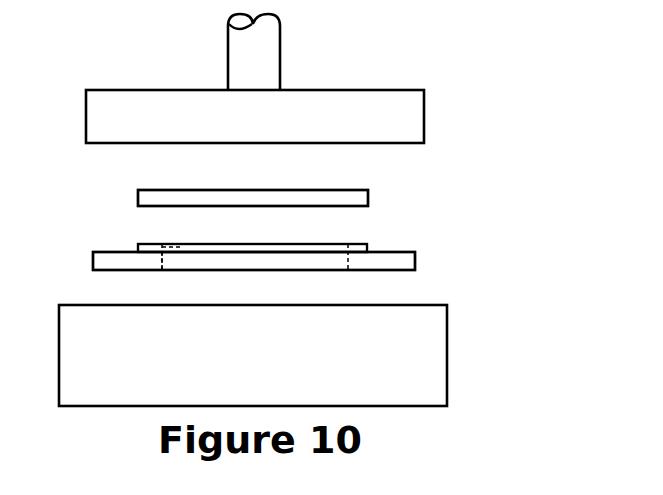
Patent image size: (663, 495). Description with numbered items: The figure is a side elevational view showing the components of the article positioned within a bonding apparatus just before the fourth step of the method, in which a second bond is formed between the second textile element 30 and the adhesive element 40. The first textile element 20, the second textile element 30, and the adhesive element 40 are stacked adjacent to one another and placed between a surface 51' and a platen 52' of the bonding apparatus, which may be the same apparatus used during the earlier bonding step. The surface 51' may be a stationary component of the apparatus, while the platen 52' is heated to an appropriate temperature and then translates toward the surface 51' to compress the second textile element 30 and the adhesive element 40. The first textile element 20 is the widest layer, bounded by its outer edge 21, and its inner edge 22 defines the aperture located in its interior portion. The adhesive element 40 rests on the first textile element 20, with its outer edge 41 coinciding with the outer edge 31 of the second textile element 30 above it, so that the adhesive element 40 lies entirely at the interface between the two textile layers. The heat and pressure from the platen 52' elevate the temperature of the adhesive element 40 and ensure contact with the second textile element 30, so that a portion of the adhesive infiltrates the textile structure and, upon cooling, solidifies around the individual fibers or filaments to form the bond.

The platen 52' is at (288, 78).
The surface 51' is at (287, 355).
The second textile element 30 is at (166, 187).
The outer edge 31 is at (370, 197).
The first textile element 20 is at (97, 248).
The outer edge 21 is at (417, 261).
The outer edge 41 is at (367, 245).
The adhesive element 40 is at (147, 239).
The inner edge 22 is at (166, 257).